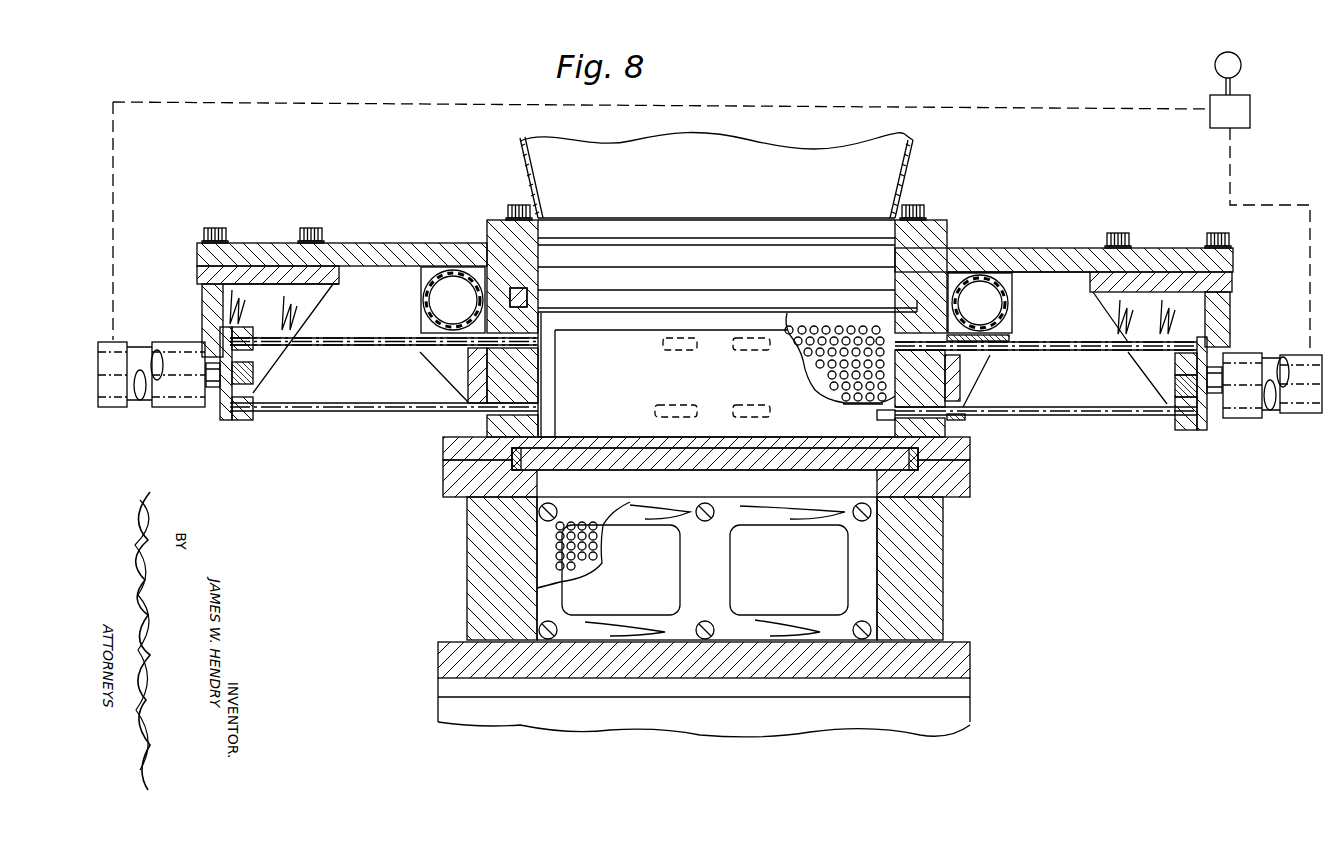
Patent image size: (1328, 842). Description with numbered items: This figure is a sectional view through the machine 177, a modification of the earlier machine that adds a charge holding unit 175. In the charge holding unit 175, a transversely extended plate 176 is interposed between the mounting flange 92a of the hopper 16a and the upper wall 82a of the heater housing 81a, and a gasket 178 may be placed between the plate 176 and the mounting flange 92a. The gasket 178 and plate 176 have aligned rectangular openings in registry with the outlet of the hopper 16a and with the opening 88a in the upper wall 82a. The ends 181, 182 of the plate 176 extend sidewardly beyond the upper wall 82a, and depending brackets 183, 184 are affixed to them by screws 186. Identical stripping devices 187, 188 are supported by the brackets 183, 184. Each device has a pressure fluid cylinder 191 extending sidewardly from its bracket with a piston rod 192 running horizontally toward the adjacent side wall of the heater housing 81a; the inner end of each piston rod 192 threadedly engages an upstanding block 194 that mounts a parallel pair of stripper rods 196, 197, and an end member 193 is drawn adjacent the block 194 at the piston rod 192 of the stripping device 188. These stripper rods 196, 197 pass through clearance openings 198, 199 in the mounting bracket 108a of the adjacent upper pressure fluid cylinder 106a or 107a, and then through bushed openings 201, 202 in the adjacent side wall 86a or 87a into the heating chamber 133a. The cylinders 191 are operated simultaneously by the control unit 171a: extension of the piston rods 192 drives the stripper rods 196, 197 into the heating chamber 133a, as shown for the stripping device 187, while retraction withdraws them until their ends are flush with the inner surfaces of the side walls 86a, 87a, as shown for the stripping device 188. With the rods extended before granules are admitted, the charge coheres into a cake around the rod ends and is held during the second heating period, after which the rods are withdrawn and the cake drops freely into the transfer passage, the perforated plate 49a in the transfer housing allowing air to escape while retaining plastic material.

The hopper 16a is at (904, 155).
The mounting flange 92a is at (846, 212).
The gasket 178 is at (787, 216).
The opening in upper wall 88a is at (542, 279).
The end of plate 181 is at (374, 226).
The depending bracket 183 is at (203, 290).
The upper pressure fluid cylinder 106a is at (424, 302).
The upper wall 82a is at (505, 228).
The side wall 86a is at (527, 373).
The bushed opening 201 is at (828, 352).
The side wall 87a is at (843, 404).
The bushed opening 202 is at (886, 416).
The stripper rod 196 is at (1038, 346).
The stripper rod 197 is at (1005, 412).
The clearance opening 198 is at (1005, 341).
The clearance opening 199 is at (962, 420).
The stripping device 187 is at (209, 427).
The plate 176 is at (906, 262).
The upper pressure fluid cylinder 107a is at (1006, 293).
The end of plate 182 is at (1068, 226).
The screw 186 is at (1124, 236).
The depending bracket 184 is at (1232, 313).
The mounting bracket 108a is at (990, 367).
The stripping device 188 is at (1220, 443).
The end plate 193 is at (1214, 424).
The upstanding block 194 is at (1178, 394).
The piston rod 192 is at (1222, 380).
The pressure fluid cylinder 191 is at (1307, 420).
The charge holding unit 175 is at (1000, 437).
The machine 177 is at (1058, 70).
The control unit 171a is at (1250, 111).
The heater housing 81a is at (425, 447).
The heating chamber 133a is at (561, 471).
The perforated plate 49a is at (600, 545).